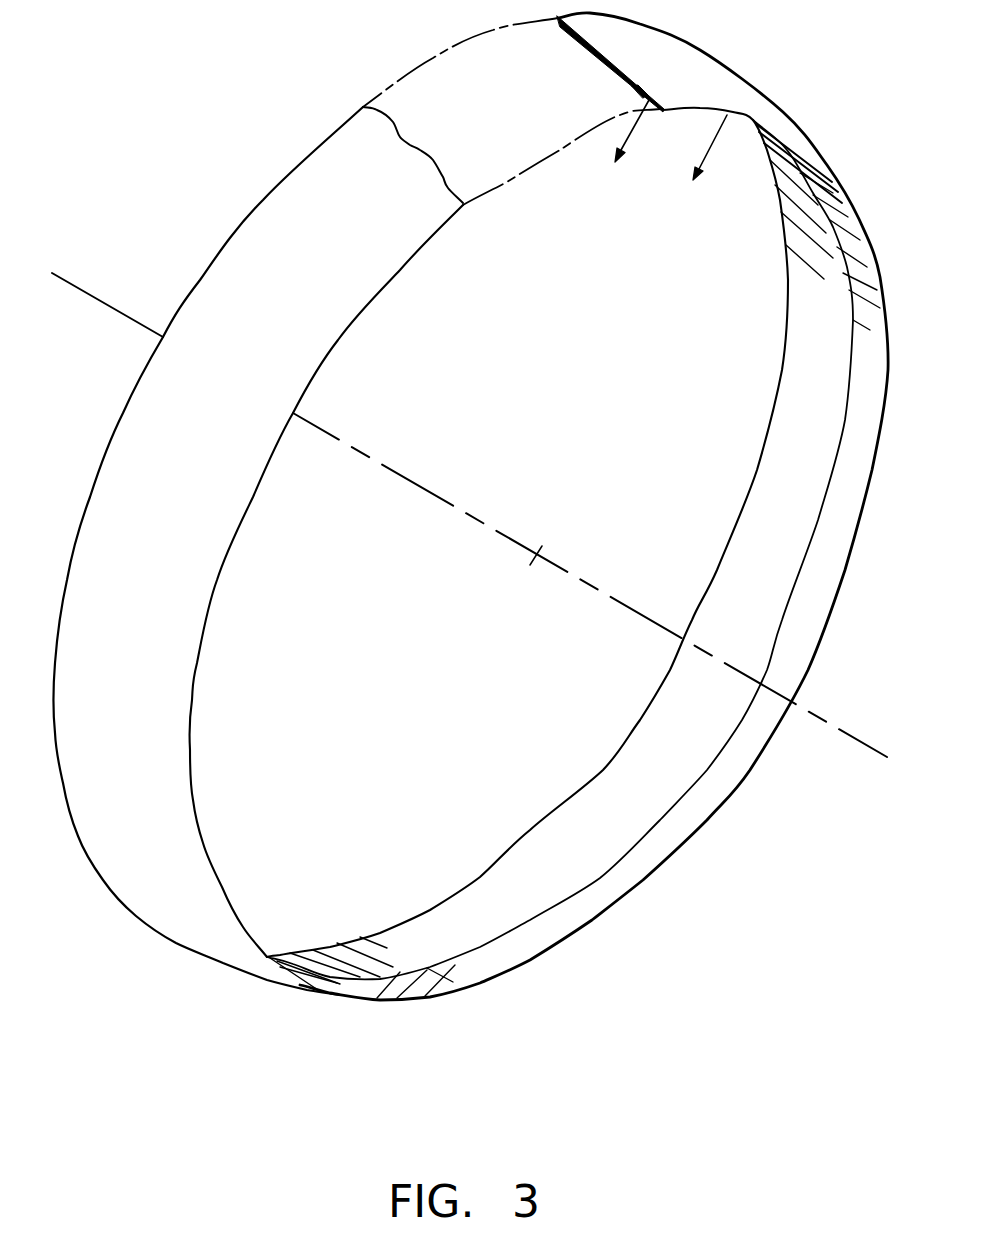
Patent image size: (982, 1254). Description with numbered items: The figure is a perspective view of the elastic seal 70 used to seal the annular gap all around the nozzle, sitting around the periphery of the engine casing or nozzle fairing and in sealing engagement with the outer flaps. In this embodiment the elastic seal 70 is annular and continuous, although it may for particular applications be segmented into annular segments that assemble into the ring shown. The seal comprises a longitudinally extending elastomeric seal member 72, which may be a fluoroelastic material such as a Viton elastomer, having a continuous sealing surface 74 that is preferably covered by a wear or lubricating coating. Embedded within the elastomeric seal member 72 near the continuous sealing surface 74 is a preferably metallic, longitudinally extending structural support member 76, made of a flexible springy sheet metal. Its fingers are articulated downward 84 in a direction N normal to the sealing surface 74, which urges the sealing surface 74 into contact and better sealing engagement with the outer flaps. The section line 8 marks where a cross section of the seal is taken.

The elastic seal 70 is at (560, 366).
The elastomeric seal member 72 is at (681, 72).
The continuous sealing surface 74 is at (638, 862).
The structural support member 76 is at (590, 52).
The downward articulation 84 is at (705, 152).
The section line 8 is at (515, 540).
The normal direction N is at (631, 130).